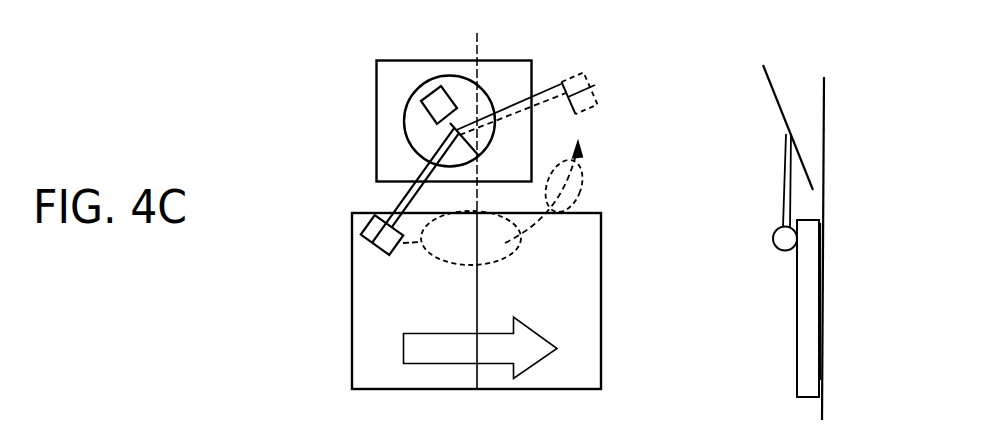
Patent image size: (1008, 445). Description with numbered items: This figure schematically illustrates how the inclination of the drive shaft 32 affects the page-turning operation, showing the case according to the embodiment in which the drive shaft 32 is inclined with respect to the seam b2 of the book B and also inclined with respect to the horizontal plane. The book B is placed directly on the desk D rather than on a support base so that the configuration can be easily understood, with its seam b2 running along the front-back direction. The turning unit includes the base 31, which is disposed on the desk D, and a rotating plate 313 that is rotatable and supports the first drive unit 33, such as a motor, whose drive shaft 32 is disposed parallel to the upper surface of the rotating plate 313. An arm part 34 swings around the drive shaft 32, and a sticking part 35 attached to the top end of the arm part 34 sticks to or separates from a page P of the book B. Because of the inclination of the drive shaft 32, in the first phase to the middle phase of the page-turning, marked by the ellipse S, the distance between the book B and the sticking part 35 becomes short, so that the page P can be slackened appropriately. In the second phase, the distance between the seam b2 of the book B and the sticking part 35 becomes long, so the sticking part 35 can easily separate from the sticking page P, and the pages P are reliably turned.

The base 31 is at (520, 72).
The rotating plate 313 is at (463, 88).
The drive shaft 32 is at (428, 92).
The first drive unit 33 is at (420, 103).
The arm part 34 is at (397, 201).
The sticking part 35 is at (358, 232).
The book B is at (603, 255).
The page P is at (361, 323).
The ellipse S is at (510, 255).
The desk D is at (824, 85).
The seam b2 is at (476, 378).